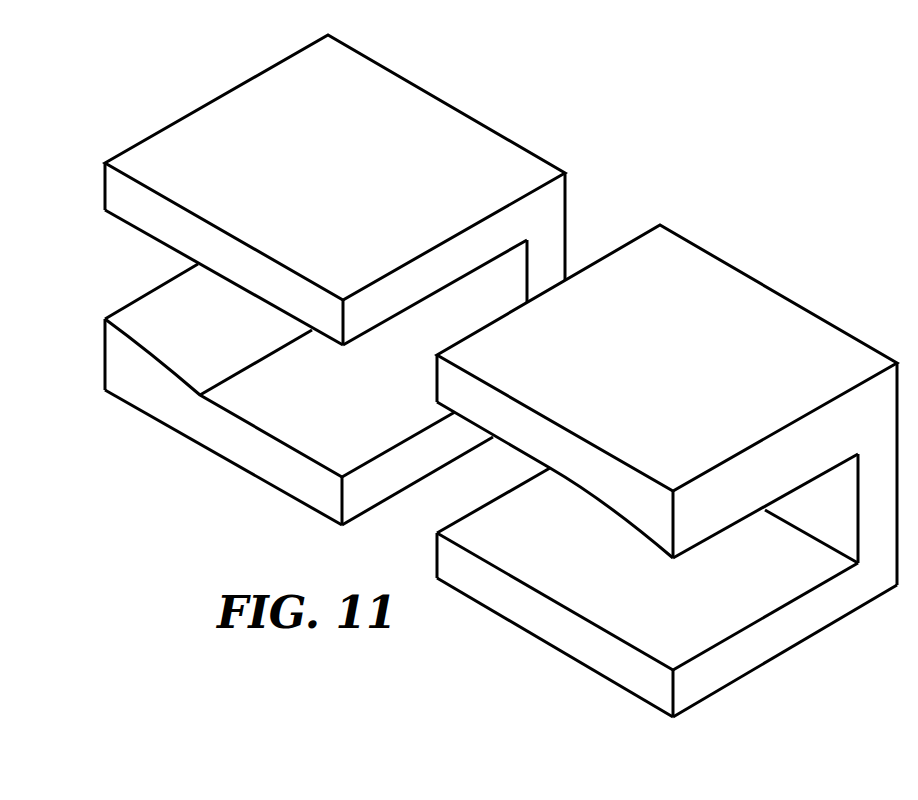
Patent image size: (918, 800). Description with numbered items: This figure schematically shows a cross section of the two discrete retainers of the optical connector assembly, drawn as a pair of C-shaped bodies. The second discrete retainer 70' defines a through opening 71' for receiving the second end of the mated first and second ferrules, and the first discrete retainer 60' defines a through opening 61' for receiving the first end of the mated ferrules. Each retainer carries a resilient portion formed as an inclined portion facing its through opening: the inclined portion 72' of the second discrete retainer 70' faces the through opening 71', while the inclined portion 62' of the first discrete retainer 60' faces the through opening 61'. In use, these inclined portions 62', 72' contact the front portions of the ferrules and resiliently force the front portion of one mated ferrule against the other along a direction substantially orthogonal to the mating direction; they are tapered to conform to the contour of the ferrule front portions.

The through opening 71' is at (296, 280).
The second discrete retainer 70' is at (335, 190).
The inclined portion 72' is at (289, 394).
The first discrete retainer 60' is at (667, 486).
The inclined portion 62' is at (667, 469).
The through opening 61' is at (667, 608).